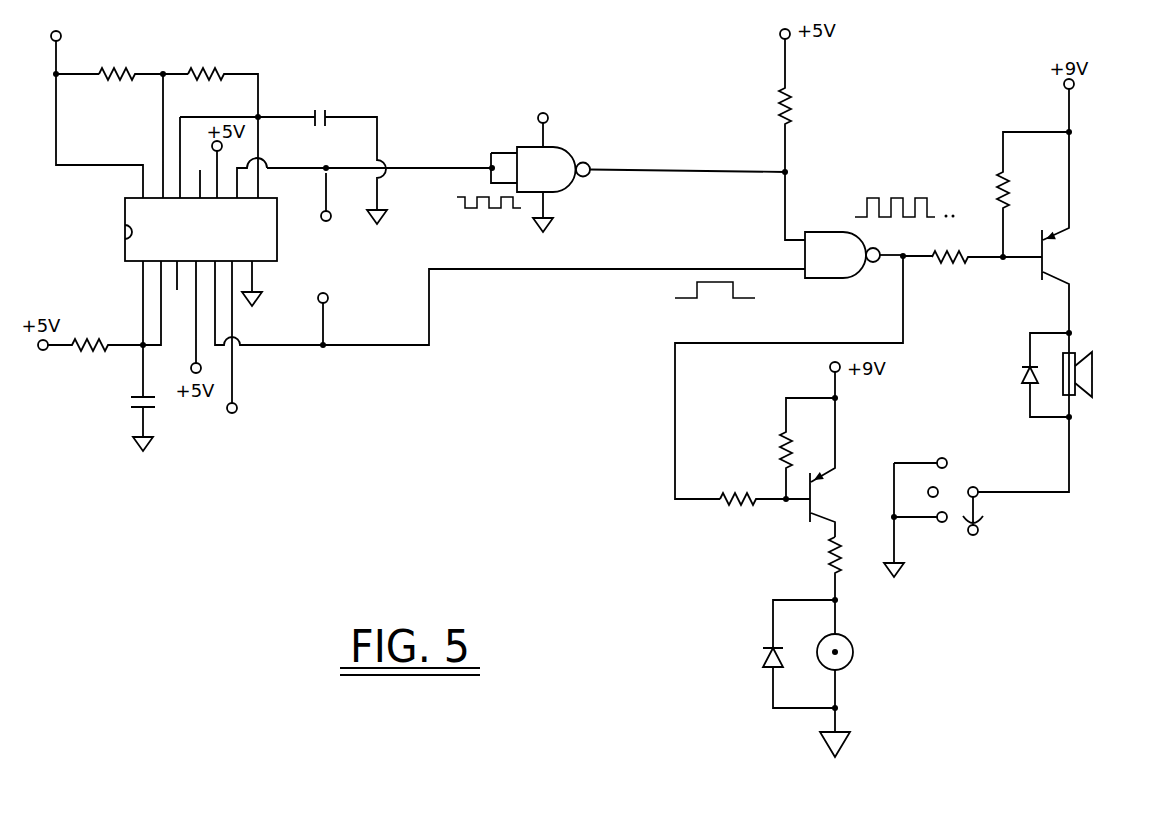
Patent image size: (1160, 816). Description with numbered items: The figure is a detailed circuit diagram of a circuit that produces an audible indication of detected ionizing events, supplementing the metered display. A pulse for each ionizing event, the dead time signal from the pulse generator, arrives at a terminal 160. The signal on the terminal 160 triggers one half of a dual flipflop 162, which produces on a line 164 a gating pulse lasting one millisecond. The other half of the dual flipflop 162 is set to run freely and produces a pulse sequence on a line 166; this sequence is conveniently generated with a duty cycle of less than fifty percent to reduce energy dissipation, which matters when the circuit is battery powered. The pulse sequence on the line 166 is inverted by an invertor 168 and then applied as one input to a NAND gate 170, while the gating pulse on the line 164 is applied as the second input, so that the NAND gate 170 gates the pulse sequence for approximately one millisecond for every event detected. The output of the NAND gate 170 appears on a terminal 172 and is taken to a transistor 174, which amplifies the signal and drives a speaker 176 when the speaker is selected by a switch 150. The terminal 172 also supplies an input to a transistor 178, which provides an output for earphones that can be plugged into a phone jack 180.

The switch 150 is at (950, 478).
The terminal 160 is at (236, 404).
The dual flipflop 162 is at (277, 240).
The line 164 is at (375, 346).
The line 166 is at (285, 168).
The invertor 168 is at (560, 147).
The NAND gate 170 is at (825, 278).
The terminal 172 is at (903, 285).
The transistor 174 is at (1050, 287).
The speaker 176 is at (1078, 352).
The transistor 178 is at (822, 525).
The phone jack 180 is at (845, 668).